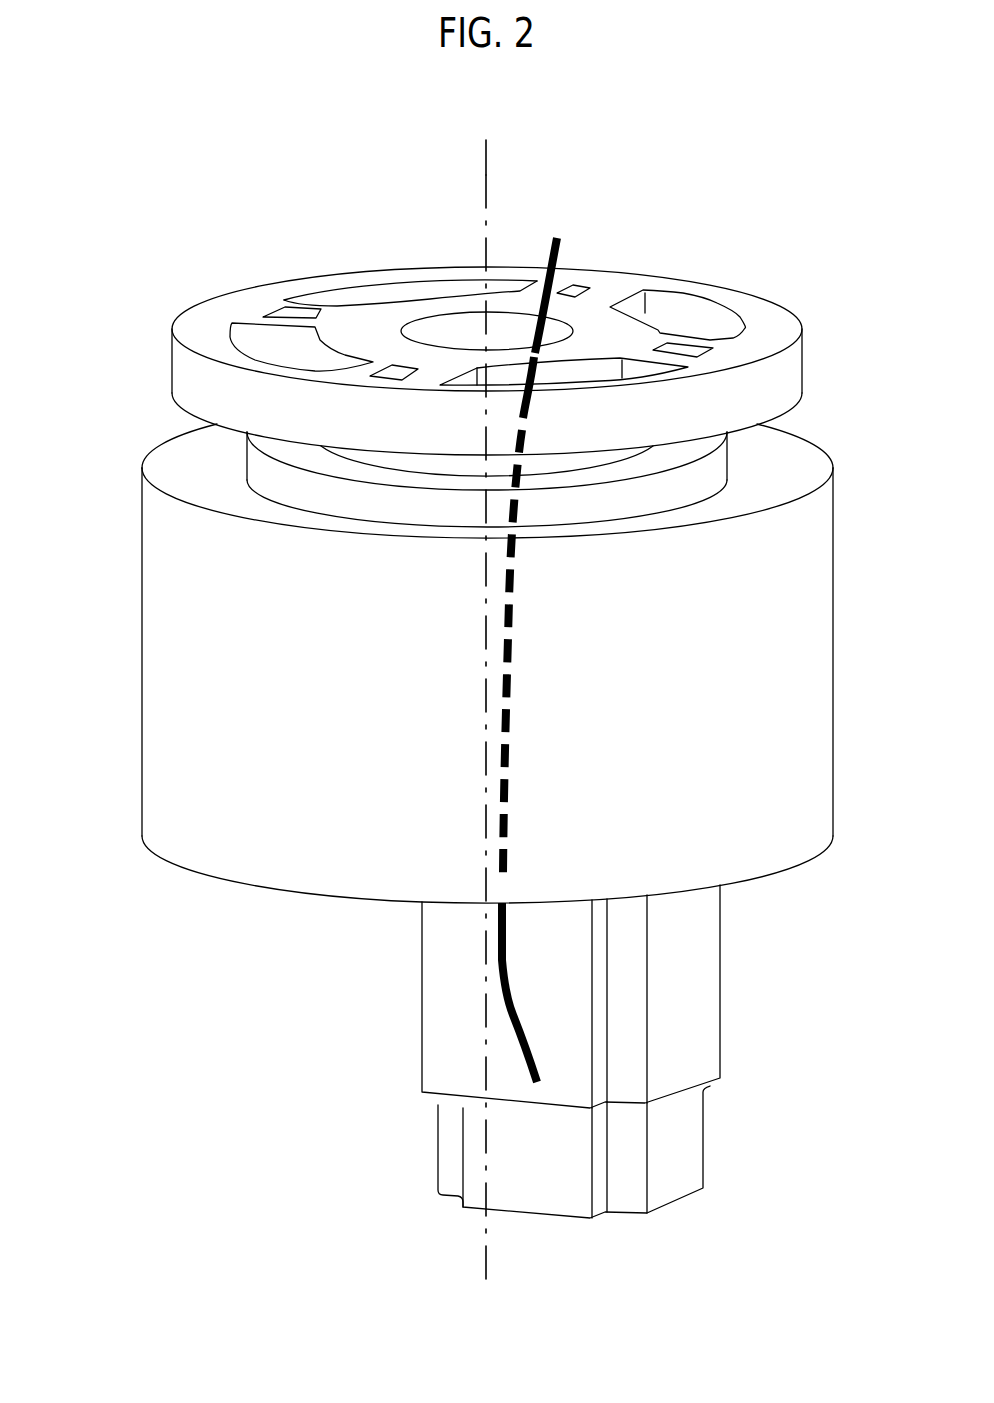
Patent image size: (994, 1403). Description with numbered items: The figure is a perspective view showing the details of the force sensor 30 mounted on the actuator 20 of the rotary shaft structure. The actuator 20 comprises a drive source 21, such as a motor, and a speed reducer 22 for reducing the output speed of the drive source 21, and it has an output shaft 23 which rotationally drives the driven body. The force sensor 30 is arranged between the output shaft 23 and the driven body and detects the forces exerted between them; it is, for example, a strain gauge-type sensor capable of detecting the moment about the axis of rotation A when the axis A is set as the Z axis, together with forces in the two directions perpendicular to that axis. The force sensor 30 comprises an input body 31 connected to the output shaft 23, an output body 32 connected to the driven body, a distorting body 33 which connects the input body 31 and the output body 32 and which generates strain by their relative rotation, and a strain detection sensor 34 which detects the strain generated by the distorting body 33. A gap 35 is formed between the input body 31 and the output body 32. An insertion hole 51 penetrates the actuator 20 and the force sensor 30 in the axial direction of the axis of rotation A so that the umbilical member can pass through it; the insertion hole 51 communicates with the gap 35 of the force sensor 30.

The actuator 20 is at (472, 803).
The drive source 21 is at (693, 1000).
The speed reducer 22 is at (800, 657).
The output shaft 23 is at (710, 480).
The force sensor 30 is at (468, 311).
The input body 31 is at (608, 330).
The output body 32 is at (767, 340).
The distorting body 33 is at (317, 302).
The strain detection sensor 34 is at (400, 365).
The gap 35 is at (453, 287).
The insertion hole 51 is at (505, 332).
The axis of rotation A is at (489, 150).